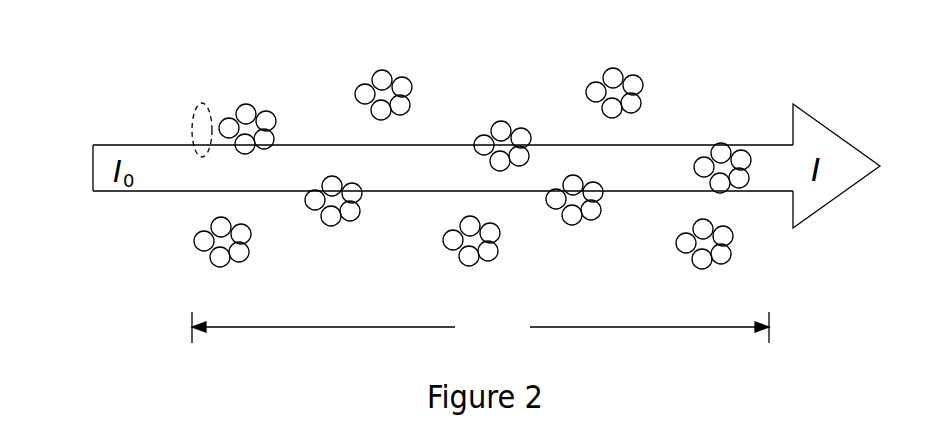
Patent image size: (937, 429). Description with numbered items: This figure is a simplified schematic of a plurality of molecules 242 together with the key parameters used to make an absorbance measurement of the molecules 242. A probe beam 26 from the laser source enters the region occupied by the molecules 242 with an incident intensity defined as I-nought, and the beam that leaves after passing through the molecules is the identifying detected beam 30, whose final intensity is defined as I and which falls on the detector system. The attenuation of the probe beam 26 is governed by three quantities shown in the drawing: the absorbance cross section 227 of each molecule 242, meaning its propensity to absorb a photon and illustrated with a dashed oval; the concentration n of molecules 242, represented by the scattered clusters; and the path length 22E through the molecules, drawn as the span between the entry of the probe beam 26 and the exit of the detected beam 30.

The probe beam 26 is at (93, 172).
The identifying detected beam 30 is at (825, 137).
The absorbance cross section 227 is at (202, 105).
The concentration of molecules n is at (383, 62).
The molecules 242 is at (641, 82).
The path length 22E is at (480, 327).